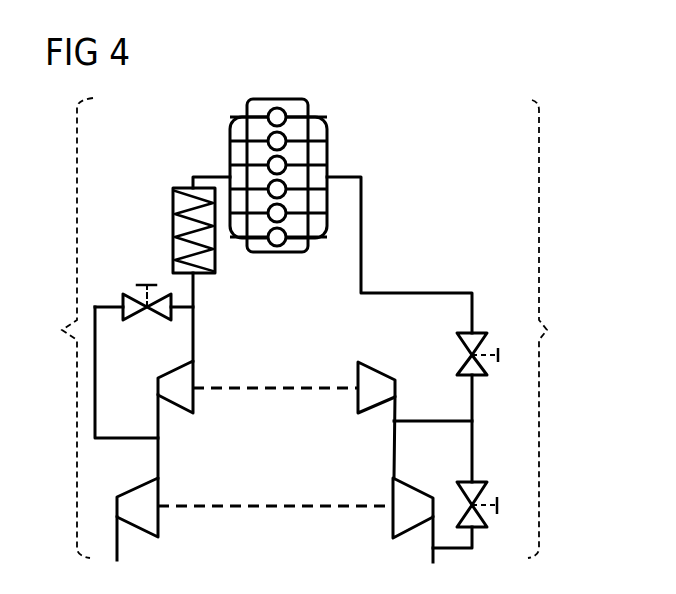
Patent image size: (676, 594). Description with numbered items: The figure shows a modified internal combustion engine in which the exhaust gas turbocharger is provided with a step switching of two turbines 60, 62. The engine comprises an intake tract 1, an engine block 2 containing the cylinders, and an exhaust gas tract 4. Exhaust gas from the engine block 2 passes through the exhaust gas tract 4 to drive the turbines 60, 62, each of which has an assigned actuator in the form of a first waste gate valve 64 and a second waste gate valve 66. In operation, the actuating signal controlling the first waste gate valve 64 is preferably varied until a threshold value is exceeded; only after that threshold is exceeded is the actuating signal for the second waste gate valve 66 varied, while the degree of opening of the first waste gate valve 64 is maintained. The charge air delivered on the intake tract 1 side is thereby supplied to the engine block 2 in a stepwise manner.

The intake tract 1 is at (65, 328).
The engine block 2 is at (281, 99).
The exhaust gas tract 4 is at (548, 329).
The turbine 60 is at (372, 364).
The turbine 62 is at (405, 480).
The first waste gate valve 64 is at (477, 333).
The second waste gate valve 66 is at (472, 482).